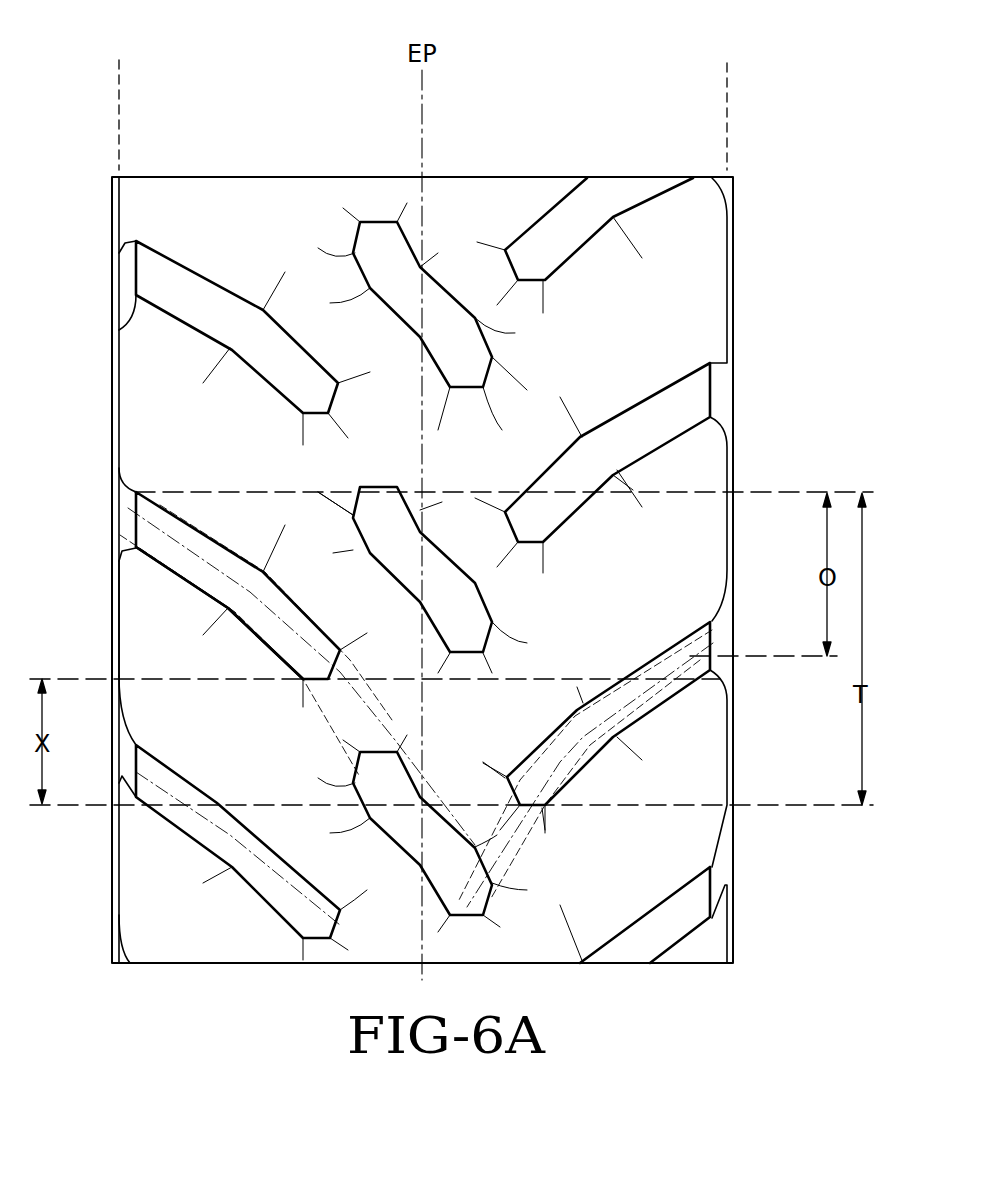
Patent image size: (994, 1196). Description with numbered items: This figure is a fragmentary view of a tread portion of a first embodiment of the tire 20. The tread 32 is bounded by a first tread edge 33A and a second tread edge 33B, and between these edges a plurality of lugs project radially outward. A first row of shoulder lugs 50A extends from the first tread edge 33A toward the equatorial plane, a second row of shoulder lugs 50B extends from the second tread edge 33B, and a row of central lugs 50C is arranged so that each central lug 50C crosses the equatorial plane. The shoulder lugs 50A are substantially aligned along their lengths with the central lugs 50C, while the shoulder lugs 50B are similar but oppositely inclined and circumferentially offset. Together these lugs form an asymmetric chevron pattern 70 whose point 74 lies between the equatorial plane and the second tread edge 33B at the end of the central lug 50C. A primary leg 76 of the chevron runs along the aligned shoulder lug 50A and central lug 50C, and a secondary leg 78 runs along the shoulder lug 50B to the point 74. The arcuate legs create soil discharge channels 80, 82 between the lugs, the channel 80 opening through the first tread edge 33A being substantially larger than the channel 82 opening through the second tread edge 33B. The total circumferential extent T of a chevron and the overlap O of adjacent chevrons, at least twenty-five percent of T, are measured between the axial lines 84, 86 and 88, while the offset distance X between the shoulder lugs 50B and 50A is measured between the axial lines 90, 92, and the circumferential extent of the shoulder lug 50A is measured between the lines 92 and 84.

The tire 20 is at (85, 132).
The first tread edge 33A is at (120, 82).
The second tread edge 33B is at (726, 83).
The tread 32 is at (170, 355).
The axial line 84 is at (775, 492).
The soil discharge channel 82 is at (672, 551).
The shoulder lug 50A is at (157, 520).
The chevron pattern 70 is at (165, 548).
The soil discharge channel 80 is at (172, 648).
The shoulder lug 50B is at (690, 648).
The primary leg 76 is at (277, 620).
The axial line 92 is at (172, 680).
The secondary leg 78 is at (573, 743).
The axial line 86 is at (780, 658).
The central lug 50C is at (355, 793).
The axial line 90 is at (78, 805).
The axial line 88 is at (795, 807).
The point of the chevron 74 is at (483, 917).